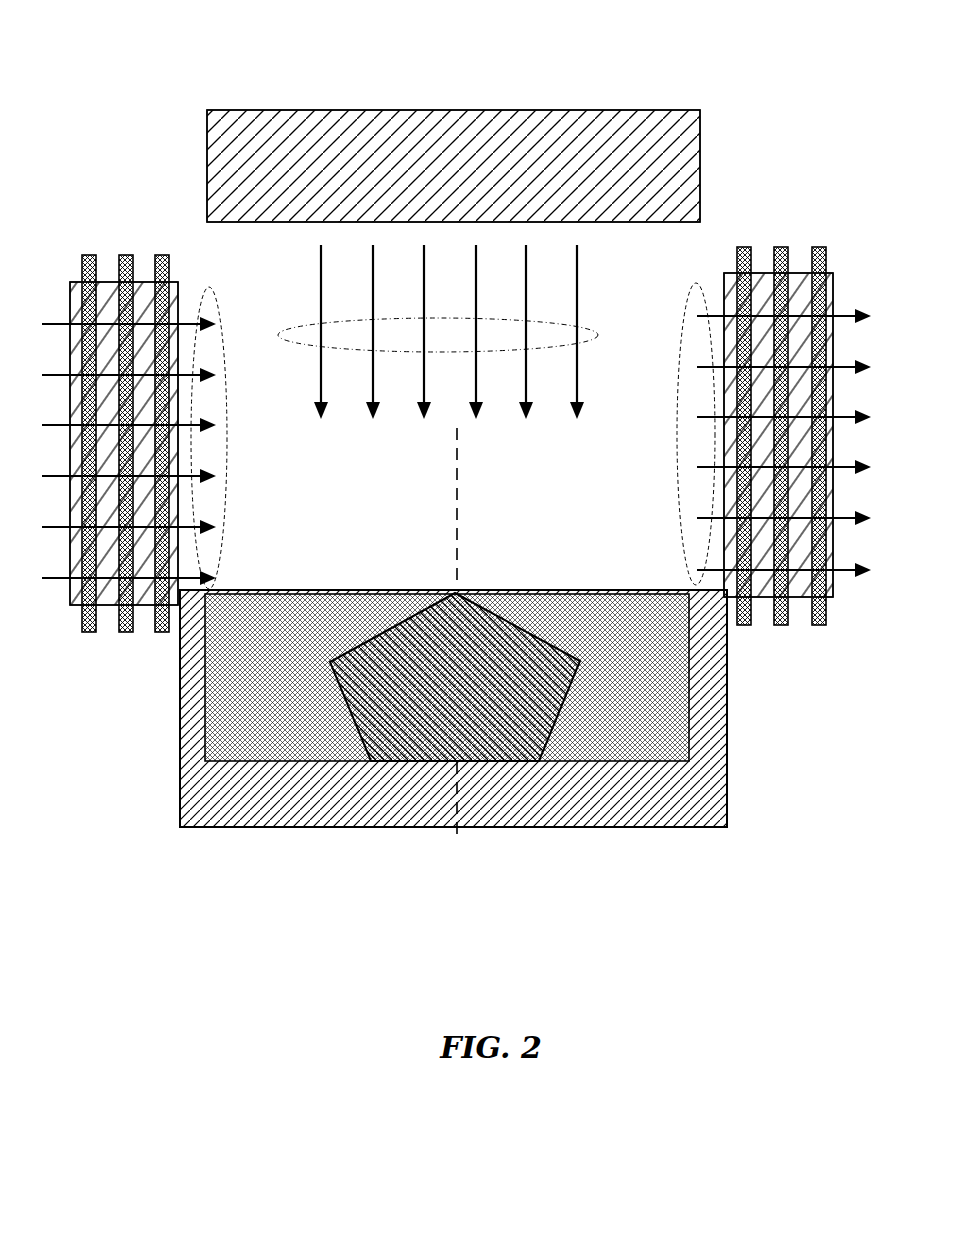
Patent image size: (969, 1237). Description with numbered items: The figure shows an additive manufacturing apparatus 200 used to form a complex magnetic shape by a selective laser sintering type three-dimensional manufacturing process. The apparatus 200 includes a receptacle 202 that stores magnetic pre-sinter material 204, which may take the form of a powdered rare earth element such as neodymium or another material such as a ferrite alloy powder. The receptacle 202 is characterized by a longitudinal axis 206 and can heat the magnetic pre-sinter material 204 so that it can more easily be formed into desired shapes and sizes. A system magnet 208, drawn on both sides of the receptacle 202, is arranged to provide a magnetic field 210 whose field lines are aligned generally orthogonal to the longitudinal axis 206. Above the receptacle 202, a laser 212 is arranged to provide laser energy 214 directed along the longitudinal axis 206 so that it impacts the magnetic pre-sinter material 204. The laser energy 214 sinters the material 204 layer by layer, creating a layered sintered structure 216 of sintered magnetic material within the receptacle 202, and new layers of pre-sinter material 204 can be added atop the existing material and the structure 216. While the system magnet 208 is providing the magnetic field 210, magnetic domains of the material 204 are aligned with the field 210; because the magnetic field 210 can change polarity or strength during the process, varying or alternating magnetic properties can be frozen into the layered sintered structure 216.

The additive manufacturing apparatus 200 is at (281, 78).
The receptacle 202 is at (453, 708).
The magnetic pre-sinter material 204 is at (447, 677).
The longitudinal axis 206 is at (457, 858).
The system magnet 208 is at (110, 246).
The magnetic field 210 is at (208, 288).
The laser 212 is at (453, 166).
The laser energy 214 is at (598, 334).
The layered sintered structure 216 is at (455, 677).